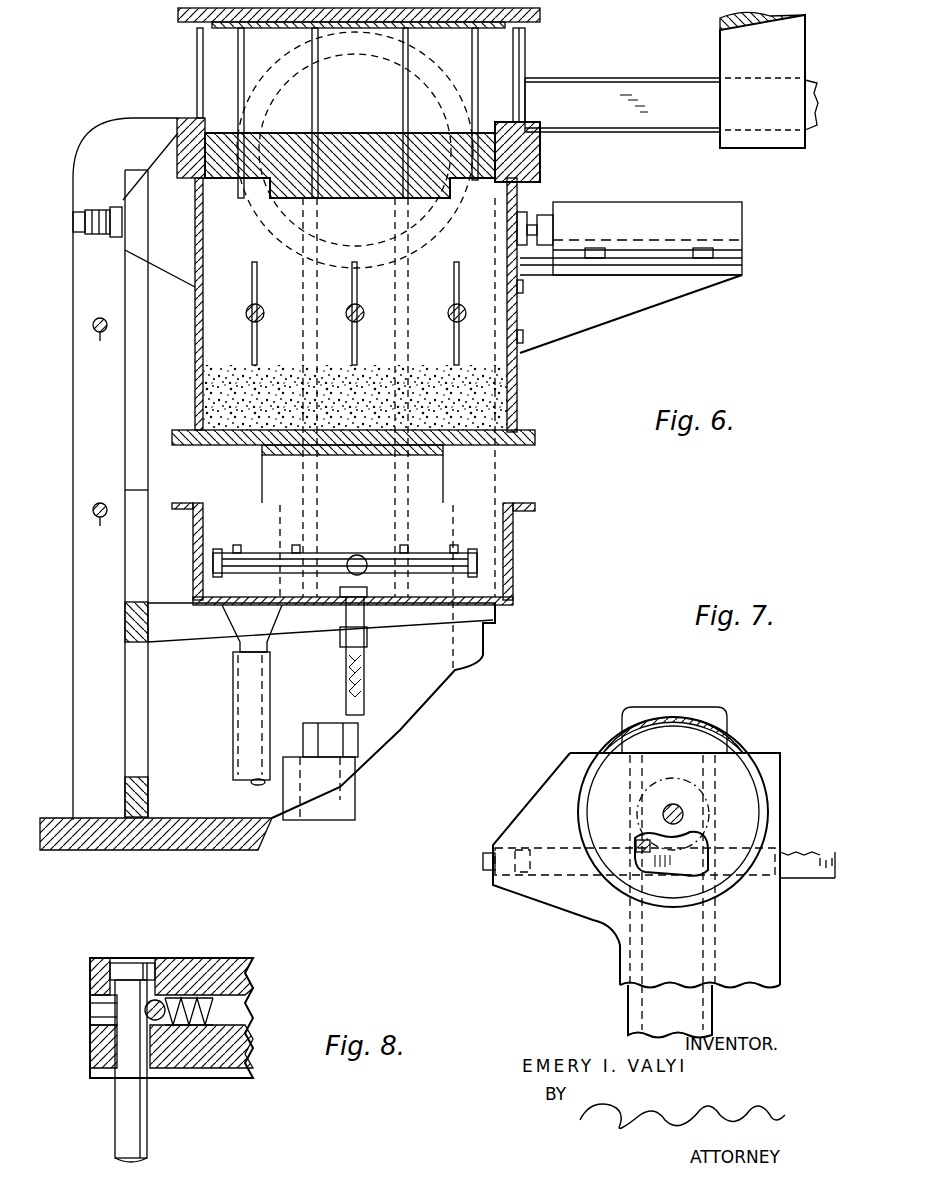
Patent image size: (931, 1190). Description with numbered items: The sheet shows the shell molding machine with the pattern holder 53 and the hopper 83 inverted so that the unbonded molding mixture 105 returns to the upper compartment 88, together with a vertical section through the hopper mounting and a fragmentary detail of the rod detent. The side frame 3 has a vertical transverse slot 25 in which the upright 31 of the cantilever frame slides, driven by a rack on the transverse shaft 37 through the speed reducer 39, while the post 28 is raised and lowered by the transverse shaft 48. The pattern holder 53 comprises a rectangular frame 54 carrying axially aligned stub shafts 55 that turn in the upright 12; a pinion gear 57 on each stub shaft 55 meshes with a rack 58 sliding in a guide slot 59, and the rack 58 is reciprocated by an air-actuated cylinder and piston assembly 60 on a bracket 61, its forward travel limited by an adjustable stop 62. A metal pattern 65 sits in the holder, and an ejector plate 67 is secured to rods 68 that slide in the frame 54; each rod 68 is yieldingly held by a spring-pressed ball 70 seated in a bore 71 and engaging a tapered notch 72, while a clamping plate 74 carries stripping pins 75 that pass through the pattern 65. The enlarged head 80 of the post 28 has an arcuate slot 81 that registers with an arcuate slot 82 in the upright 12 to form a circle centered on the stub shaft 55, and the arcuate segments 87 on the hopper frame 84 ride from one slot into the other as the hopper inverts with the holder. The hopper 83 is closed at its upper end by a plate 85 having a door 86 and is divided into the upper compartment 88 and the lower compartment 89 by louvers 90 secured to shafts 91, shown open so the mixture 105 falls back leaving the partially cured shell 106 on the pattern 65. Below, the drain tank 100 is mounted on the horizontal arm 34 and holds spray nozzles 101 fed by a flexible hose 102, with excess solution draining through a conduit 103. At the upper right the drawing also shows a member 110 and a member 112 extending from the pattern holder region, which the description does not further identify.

In FIG. 6, the side frame 3 is at (73, 452).
In FIG. 6, the upright 12 is at (480, 477).
In FIG. 7, the upright 12 is at (765, 975).
In FIG. 6, the vertical transverse slot 25 is at (148, 378).
In FIG. 7, the post 28 is at (640, 1005).
In FIG. 6, the upright 31 is at (125, 585).
In FIG. 6, the horizontal arm 34 is at (400, 625).
In FIG. 6, the transverse shaft 37 is at (95, 530).
In FIG. 6, the speed reducer 39 is at (160, 602).
In FIG. 6, the transverse shaft 48 is at (95, 340).
In FIG. 6, the pattern holder 53 is at (177, 130).
In FIG. 6, the rectangular frame 54 is at (540, 150).
In FIG. 8, the rectangular frame 54 is at (253, 985).
In FIG. 6, the stub shaft 55 is at (372, 200).
In FIG. 7, the stub shaft 55 is at (680, 805).
In FIG. 7, the pinion gear 57 is at (640, 850).
In FIG. 6, the rack 58 is at (535, 215).
In FIG. 7, the rack 58 is at (800, 880).
In FIG. 7, the guide slot 59 is at (755, 885).
In FIG. 6, the air-actuated cylinder and piston assembly 60 is at (648, 202).
In FIG. 6, the bracket 61 is at (635, 312).
In FIG. 6, the adjustable stop 62 is at (92, 210).
In FIG. 7, the adjustable stop 62 is at (488, 850).
In FIG. 6, the metal pattern 65 is at (340, 132).
In FIG. 6, the ejector plate 67 is at (540, 15).
In FIG. 6, the rod 68 is at (197, 50).
In FIG. 8, the rod 68 is at (115, 1110).
In FIG. 8, the spring-pressed ball 70 is at (160, 998).
In FIG. 8, the bore 71 is at (190, 1035).
In FIG. 8, the tapered notch 72 is at (117, 1018).
In FIG. 6, the clamping plate 74 is at (490, 50).
In FIG. 6, the stripping pin 75 is at (408, 53).
In FIG. 6, the head 80 is at (297, 50).
In FIG. 7, the head 80 is at (635, 712).
In FIG. 6, the arcuate slot 81 is at (350, 60).
In FIG. 7, the arcuate slot 81 is at (715, 740).
In FIG. 6, the arcuate slot 82 is at (308, 240).
In FIG. 7, the arcuate slot 82 is at (580, 778).
In FIG. 6, the hopper 83 is at (523, 312).
In FIG. 6, the rectangular frame 84 is at (195, 320).
In FIG. 6, the plate 85 is at (246, 447).
In FIG. 6, the door 86 is at (372, 455).
In FIG. 6, the arcuate segment 87 is at (445, 240).
In FIG. 7, the arcuate segment 87 is at (680, 722).
In FIG. 6, the upper compartment 88 is at (480, 343).
In FIG. 6, the lower compartment 89 is at (195, 222).
In FIG. 6, the louver 90 is at (257, 293).
In FIG. 6, the shaft 91 is at (362, 310).
In FIG. 6, the drain tank 100 is at (513, 568).
In FIG. 6, the spray nozzle 101 is at (292, 545).
In FIG. 6, the flexible hose 102 is at (366, 690).
In FIG. 6, the conduit 103 is at (233, 728).
In FIG. 6, the molding mixture 105 is at (480, 403).
In FIG. 6, the partially cured shell 106 is at (270, 210).
In FIG. 6, the fitting 110 is at (718, 40).
In FIG. 6, the pipe 112 is at (622, 76).